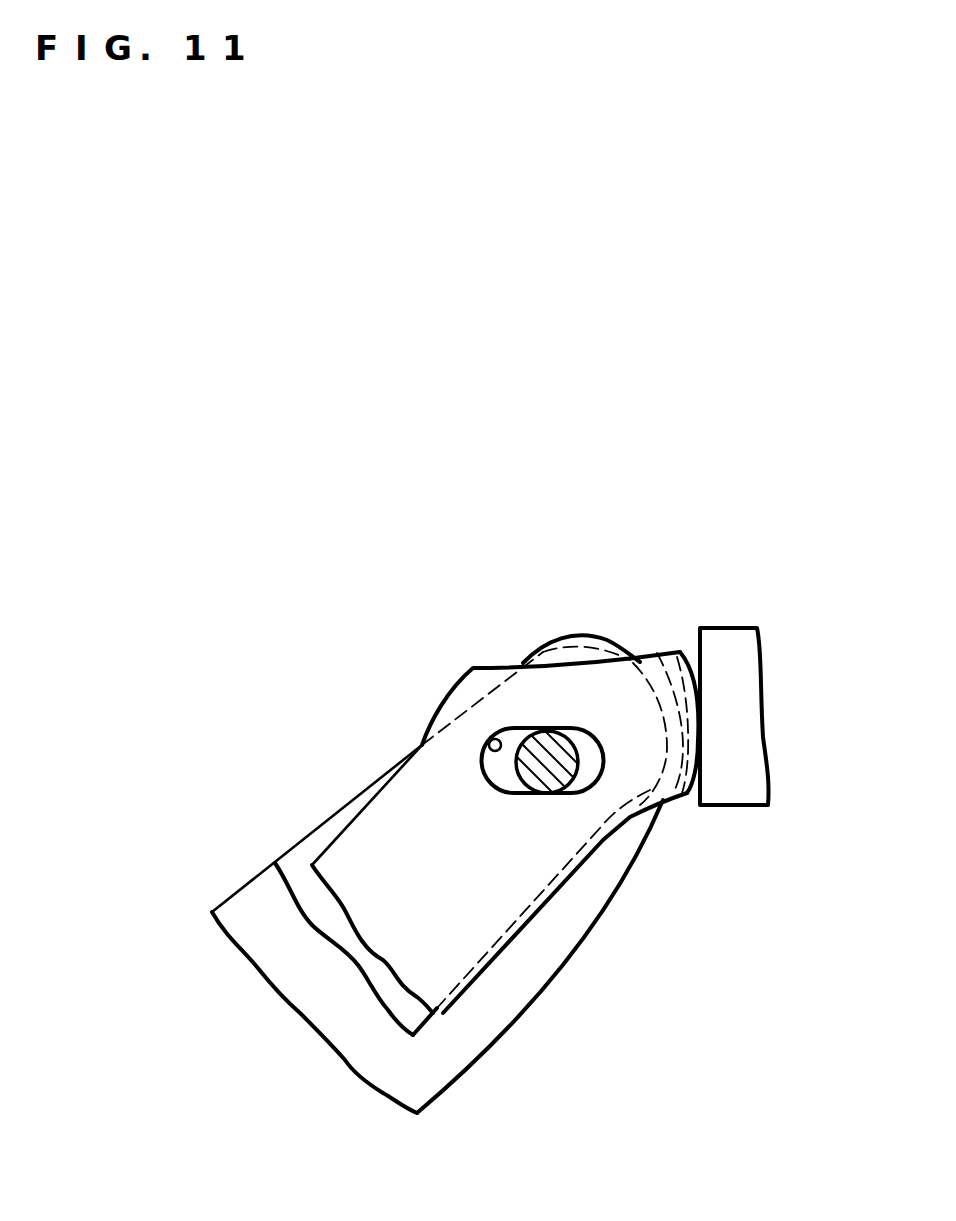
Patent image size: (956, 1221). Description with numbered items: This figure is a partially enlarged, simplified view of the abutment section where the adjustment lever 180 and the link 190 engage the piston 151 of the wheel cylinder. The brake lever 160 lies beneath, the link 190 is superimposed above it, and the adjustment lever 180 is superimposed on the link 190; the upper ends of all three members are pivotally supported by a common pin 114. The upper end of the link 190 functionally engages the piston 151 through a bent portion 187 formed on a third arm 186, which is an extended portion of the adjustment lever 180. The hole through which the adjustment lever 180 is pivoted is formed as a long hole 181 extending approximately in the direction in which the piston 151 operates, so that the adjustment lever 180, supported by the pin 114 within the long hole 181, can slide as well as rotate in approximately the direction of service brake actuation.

The pin 114 is at (557, 730).
The piston 151 is at (760, 688).
The brake lever 160 is at (338, 1037).
The adjustment lever 180 is at (523, 938).
The long hole 181 is at (488, 742).
The third arm 186 is at (633, 785).
The bent portion 187 is at (692, 667).
The link 190 is at (413, 1015).